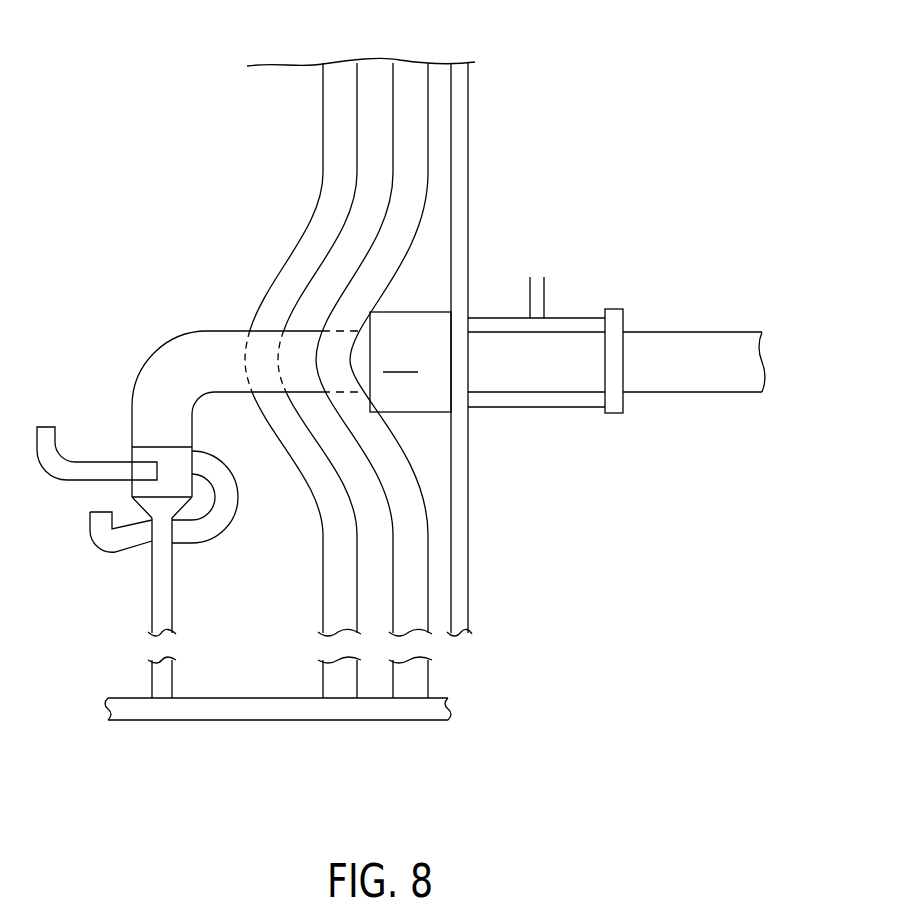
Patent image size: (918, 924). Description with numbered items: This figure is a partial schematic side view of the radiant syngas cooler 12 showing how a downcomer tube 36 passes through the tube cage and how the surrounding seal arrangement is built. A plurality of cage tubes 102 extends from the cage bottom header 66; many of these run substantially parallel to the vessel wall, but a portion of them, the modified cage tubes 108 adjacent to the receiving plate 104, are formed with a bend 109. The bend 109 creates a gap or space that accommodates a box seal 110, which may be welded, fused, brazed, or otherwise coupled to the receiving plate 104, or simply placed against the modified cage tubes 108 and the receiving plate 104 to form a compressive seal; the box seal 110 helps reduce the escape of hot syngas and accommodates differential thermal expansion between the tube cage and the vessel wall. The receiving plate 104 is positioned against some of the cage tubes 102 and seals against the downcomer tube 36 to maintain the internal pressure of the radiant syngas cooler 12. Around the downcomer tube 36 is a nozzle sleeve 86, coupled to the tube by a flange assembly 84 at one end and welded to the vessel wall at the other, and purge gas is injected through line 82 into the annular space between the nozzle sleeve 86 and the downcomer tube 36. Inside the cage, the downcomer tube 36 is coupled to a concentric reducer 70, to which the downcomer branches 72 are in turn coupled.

The radiant syngas cooler 12 is at (506, 90).
The downcomer tube 36 is at (680, 400).
The cage bottom header 66 is at (280, 720).
The concentric reducer 70 is at (177, 463).
The downcomer branches 72 is at (72, 457).
The purge gas line 82 is at (545, 300).
The flange assembly 84 is at (625, 318).
The nozzle sleeve 86 is at (587, 413).
The cage tubes 102 is at (381, 380).
The receiving plate 104 is at (469, 167).
The modified cage tubes 108 is at (323, 172).
The bend 109 is at (375, 380).
The box seal 110 is at (410, 362).